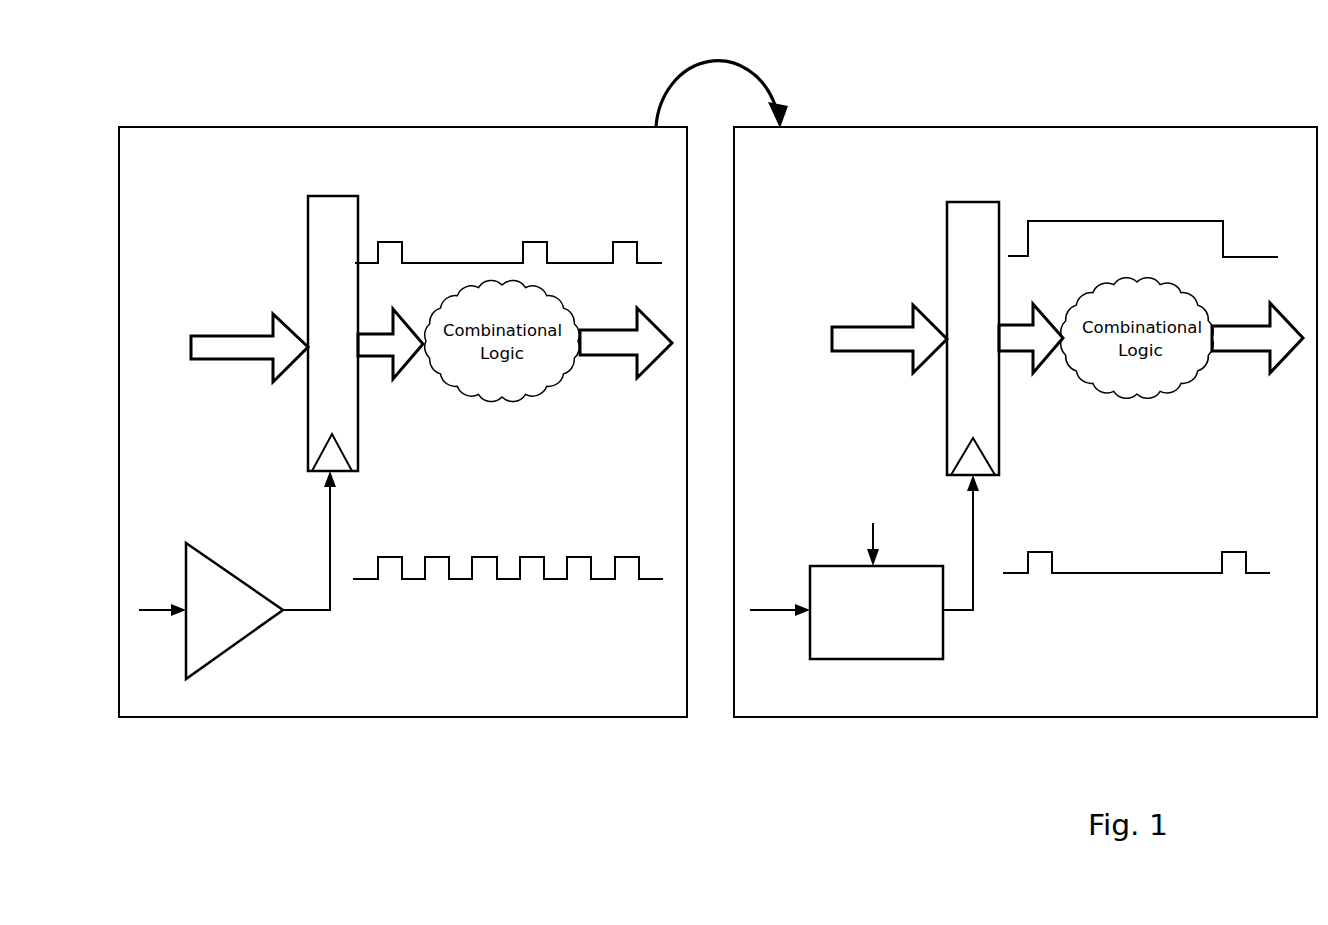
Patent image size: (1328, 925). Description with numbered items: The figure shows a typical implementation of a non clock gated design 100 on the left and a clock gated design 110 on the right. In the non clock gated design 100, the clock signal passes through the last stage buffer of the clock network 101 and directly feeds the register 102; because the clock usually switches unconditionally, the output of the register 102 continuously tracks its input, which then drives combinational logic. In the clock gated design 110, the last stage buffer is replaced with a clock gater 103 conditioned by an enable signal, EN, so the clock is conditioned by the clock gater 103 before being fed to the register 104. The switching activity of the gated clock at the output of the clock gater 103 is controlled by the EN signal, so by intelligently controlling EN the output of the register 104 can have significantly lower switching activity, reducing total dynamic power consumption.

The non clock gated design 100 is at (262, 113).
The last stage buffer of the clock network 101 is at (229, 568).
The register 102 is at (349, 196).
The clock gater 103 is at (898, 566).
The register 104 is at (988, 202).
The clock gated design 110 is at (1052, 114).